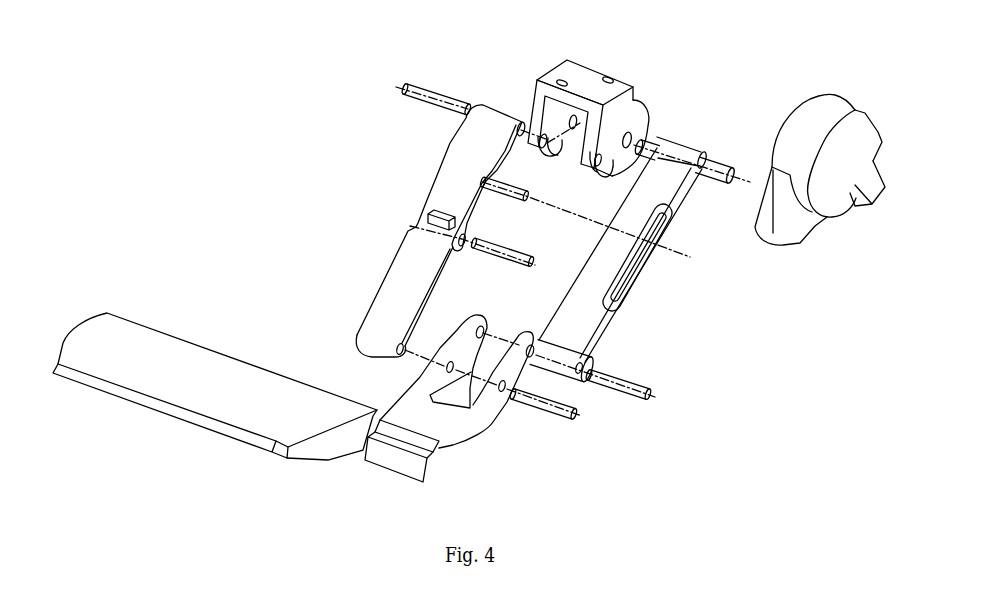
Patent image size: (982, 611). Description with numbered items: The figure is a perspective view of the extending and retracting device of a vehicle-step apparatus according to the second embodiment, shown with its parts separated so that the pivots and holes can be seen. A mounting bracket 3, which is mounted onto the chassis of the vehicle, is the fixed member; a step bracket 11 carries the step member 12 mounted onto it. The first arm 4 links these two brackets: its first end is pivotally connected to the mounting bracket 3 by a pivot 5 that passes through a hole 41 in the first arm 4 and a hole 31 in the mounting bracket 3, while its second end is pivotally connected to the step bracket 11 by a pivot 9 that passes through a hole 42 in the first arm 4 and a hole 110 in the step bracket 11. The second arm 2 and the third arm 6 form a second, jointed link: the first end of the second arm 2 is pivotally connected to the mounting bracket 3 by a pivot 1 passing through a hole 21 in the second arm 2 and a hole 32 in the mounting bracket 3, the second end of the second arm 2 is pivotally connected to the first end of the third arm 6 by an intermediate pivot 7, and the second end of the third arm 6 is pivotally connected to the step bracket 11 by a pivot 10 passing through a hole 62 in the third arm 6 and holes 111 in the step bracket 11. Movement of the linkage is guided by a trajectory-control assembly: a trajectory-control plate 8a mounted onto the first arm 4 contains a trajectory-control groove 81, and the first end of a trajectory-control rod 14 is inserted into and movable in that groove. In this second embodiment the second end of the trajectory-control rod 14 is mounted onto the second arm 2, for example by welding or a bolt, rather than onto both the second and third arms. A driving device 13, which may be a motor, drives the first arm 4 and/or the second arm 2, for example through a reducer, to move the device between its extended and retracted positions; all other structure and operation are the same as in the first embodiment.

The pivot 1 is at (444, 95).
The second arm 2 is at (485, 106).
The hole 21 is at (521, 121).
The mounting bracket 3 is at (574, 63).
The hole 31 is at (640, 104).
The hole 32 is at (593, 167).
The first arm 4 is at (661, 138).
The hole 41 is at (699, 150).
The pivot 5 is at (723, 158).
The driving device 13 is at (820, 102).
The trajectory-control rod 14 is at (482, 183).
The intermediate pivot 7 is at (500, 252).
The third arm 6 is at (390, 284).
The hole 62 is at (370, 333).
The trajectory-control groove 81 is at (657, 241).
The trajectory-control plate 8a is at (635, 280).
The hole 42 is at (584, 366).
The hole 110 is at (532, 343).
The holes 111 is at (447, 368).
The pivot 10 is at (541, 410).
The pivot 9 is at (621, 392).
The step member 12 is at (282, 432).
The step bracket 11 is at (440, 468).